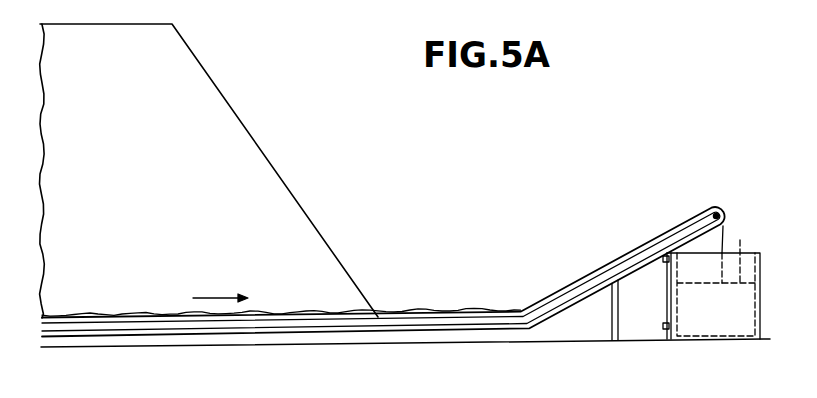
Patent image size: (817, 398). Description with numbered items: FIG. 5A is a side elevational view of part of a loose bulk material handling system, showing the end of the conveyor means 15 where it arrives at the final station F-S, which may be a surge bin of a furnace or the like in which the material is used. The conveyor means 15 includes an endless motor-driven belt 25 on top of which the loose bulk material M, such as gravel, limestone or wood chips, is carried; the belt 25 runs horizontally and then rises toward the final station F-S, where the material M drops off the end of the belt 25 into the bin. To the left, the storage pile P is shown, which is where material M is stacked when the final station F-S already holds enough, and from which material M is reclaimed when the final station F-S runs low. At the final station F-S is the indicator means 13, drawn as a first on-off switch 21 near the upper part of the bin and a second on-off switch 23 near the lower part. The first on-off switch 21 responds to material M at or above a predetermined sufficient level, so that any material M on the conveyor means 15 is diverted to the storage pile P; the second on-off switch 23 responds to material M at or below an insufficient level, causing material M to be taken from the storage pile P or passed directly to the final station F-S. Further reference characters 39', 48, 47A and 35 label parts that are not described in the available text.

The storage pile P is at (210, 102).
The loose bulk material M is at (248, 138).
The endless motor-driven belt 25 is at (200, 333).
The conveyor means 15 is at (127, 339).
The indicator means 13 is at (667, 283).
The final station F-S is at (766, 165).
The first on-off switch 21 is at (666, 262).
The second on-off switch 23 is at (668, 329).
The roller 39' is at (368, 383).
The roller 48 is at (442, 397).
The guide 47A is at (465, 397).
The drive 35 is at (491, 397).